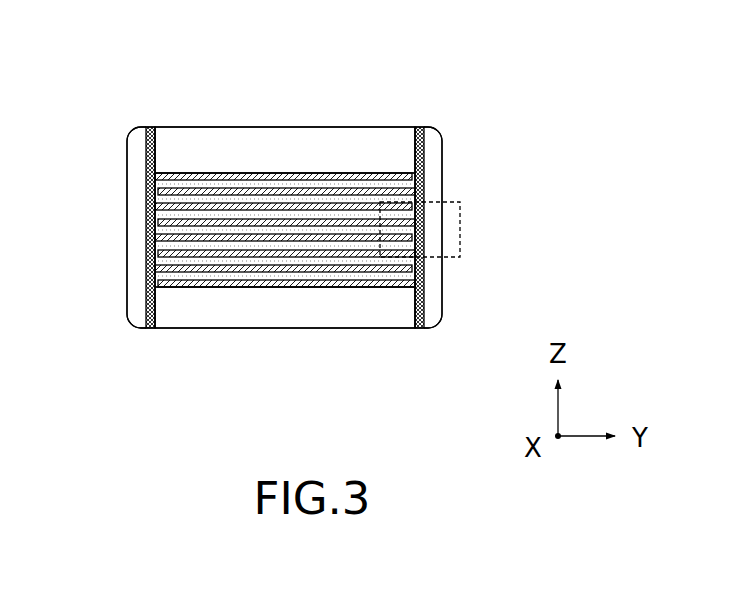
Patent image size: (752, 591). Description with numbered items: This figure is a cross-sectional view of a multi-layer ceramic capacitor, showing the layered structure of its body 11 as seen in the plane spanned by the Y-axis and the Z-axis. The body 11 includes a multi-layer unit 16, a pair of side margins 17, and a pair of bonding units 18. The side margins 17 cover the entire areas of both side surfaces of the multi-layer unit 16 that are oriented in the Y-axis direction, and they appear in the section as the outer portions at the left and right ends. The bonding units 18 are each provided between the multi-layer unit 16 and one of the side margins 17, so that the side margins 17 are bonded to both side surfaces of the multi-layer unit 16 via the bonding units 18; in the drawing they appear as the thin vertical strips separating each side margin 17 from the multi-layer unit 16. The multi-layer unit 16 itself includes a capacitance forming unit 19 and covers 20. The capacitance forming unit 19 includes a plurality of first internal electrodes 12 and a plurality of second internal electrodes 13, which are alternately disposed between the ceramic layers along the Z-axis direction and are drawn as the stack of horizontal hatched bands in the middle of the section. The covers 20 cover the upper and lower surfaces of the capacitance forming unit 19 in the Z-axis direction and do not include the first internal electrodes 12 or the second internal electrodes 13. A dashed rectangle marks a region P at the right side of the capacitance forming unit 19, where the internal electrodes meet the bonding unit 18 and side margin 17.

The body 11 is at (420, 86).
The first internal electrodes 12 is at (188, 262).
The second internal electrodes 13 is at (312, 283).
The multi-layer unit 16 is at (291, 115).
The side margins 17 is at (133, 182).
The bonding units 18 is at (149, 330).
The capacitance forming unit 19 is at (268, 240).
The covers 20 is at (268, 162).
The region P is at (461, 215).